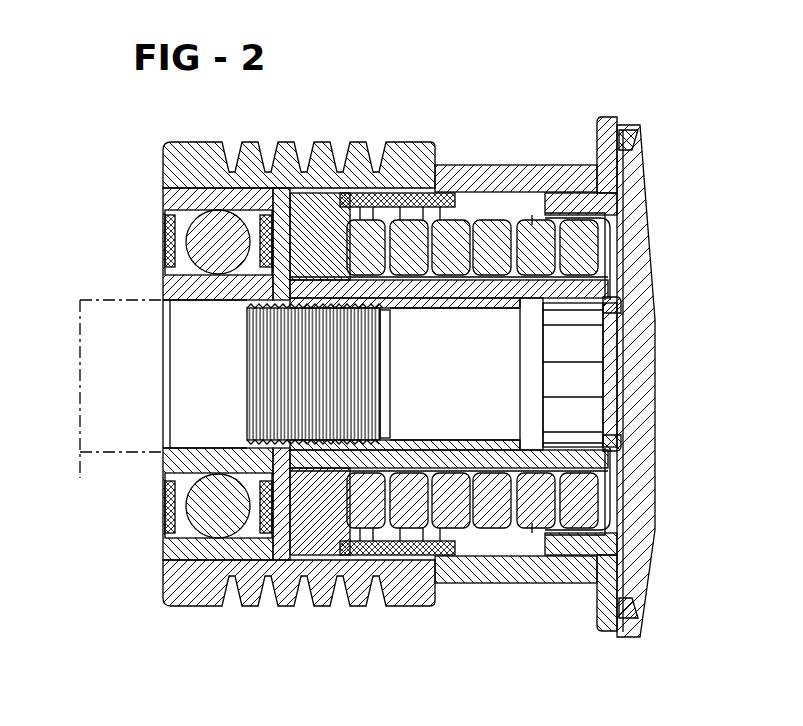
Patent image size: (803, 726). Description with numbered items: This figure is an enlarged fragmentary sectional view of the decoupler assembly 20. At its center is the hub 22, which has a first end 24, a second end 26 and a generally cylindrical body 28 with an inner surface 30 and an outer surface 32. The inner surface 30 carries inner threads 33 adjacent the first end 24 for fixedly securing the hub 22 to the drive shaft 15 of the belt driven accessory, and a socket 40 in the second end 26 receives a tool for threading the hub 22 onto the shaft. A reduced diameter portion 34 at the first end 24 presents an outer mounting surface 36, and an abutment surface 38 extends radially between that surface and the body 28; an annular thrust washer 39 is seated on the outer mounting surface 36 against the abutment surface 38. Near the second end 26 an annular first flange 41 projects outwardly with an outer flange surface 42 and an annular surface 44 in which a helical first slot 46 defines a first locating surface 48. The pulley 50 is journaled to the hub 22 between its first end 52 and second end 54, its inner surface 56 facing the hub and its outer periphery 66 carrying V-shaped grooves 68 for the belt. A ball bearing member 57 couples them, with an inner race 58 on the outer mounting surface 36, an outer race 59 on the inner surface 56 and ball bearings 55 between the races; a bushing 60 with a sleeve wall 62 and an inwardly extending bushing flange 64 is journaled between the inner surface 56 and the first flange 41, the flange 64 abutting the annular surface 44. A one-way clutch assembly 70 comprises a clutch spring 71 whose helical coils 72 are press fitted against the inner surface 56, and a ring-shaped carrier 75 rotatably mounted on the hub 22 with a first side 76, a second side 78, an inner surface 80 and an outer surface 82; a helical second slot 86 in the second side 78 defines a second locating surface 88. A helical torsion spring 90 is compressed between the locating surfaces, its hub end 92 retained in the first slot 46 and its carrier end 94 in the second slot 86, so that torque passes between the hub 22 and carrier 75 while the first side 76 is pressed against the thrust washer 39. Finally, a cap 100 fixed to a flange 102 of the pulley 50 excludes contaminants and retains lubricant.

The decoupler assembly 20 is at (652, 96).
The pulley 50 is at (160, 166).
The first end of pulley 52 is at (163, 180).
The outer race 59 is at (163, 200).
The ball bearings 55 is at (190, 243).
The inner race 58 is at (163, 278).
The first end of hub 24 is at (247, 304).
The reduced diameter portion 34 is at (250, 305).
The inner threads 33 is at (292, 385).
The outer mounting surface 36 is at (225, 450).
The abutment surface 38 is at (212, 448).
The drive shaft 15 is at (127, 455).
The ball bearing member 57 is at (150, 544).
The thrust washer 39 is at (298, 148).
The first side of carrier 76 is at (302, 213).
The second side of carrier 78 is at (327, 215).
The outer periphery 66 is at (352, 195).
The V-shaped grooves 68 is at (393, 195).
The carrier end of torsion spring 94 is at (373, 207).
The inner surface of pulley 56 is at (462, 188).
The bushing flange 64 is at (532, 200).
The bushing 60 is at (550, 190).
The outer flange surface 42 is at (558, 181).
The sleeve wall 62 is at (583, 165).
The second end of pulley 54 is at (640, 118).
The first flange 41 is at (603, 207).
The first locating surface 48 is at (585, 240).
The hub end of torsion spring 92 is at (583, 245).
The second end of hub 26 is at (622, 287).
The socket 40 is at (590, 381).
The cap 100 is at (650, 463).
The flange 102 is at (633, 634).
The second locating surface 88 is at (405, 308).
The outer surface of body 32 is at (410, 312).
The hub 22 is at (441, 309).
The inner surface of body 30 is at (480, 310).
The body 28 is at (465, 300).
The second slot 86 is at (432, 475).
The torsion spring 90 is at (483, 468).
The annular surface 44 is at (538, 203).
The inner surface of carrier 80 is at (318, 522).
The outer surface of carrier 82 is at (287, 580).
The carrier 75 is at (320, 588).
The one-way clutch assembly 70 is at (373, 580).
The clutch spring 71 is at (417, 575).
The helical coils 72 is at (430, 590).
The first slot 46 is at (550, 562).